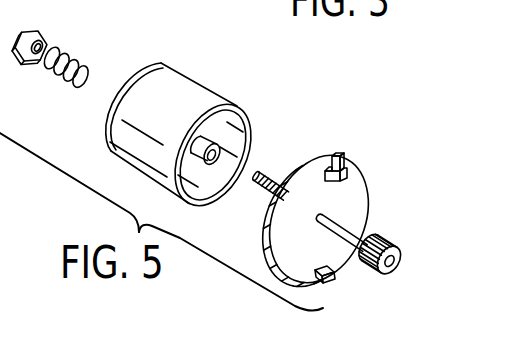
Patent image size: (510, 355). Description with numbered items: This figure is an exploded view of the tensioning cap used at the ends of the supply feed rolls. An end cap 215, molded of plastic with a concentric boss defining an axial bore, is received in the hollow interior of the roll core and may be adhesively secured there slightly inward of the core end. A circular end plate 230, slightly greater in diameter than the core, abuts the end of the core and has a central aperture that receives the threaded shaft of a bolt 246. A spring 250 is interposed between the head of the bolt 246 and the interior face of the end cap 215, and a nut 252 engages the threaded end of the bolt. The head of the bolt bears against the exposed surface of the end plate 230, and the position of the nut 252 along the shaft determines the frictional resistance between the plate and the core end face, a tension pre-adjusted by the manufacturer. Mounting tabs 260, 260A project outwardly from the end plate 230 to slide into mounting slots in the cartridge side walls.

The end cap 215 is at (223, 98).
The circular end plate 230 is at (355, 208).
The bolt 246 is at (393, 243).
The spring 250 is at (82, 57).
The nut 252 is at (48, 34).
The mounting tab 260 is at (343, 163).
The mounting tab 260A is at (336, 282).